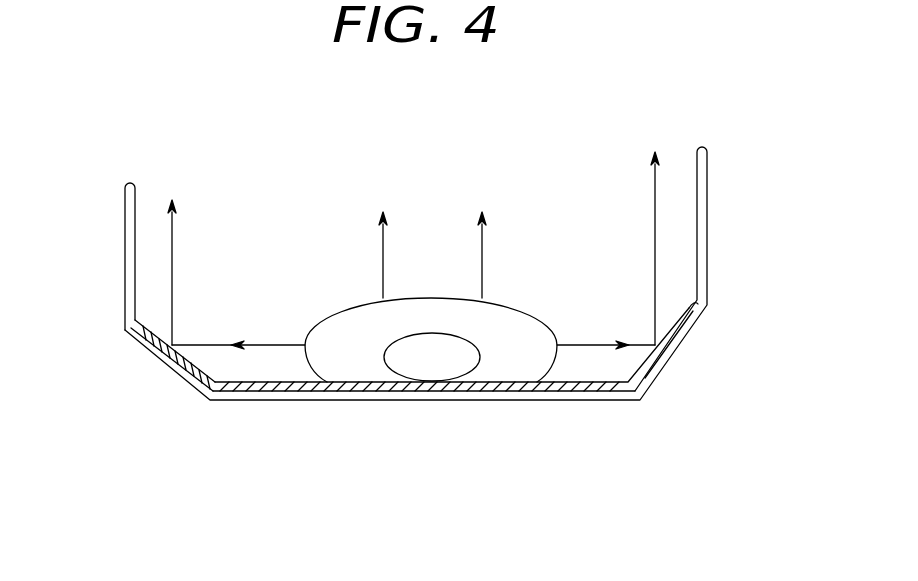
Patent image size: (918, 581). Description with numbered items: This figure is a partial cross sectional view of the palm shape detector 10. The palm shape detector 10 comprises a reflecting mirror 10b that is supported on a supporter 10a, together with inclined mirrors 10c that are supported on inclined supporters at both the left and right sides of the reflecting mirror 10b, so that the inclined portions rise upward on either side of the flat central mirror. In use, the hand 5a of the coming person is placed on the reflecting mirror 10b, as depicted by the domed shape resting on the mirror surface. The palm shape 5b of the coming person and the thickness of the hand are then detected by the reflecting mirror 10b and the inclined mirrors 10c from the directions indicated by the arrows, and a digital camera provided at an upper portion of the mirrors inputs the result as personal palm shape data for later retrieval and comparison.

The palm shape detector 10 is at (259, 143).
The supporter 10a is at (670, 348).
The reflecting mirror 10b is at (492, 385).
The inclined mirrors 10c is at (162, 359).
The hand 5a is at (347, 367).
The palm shape 5b is at (520, 307).